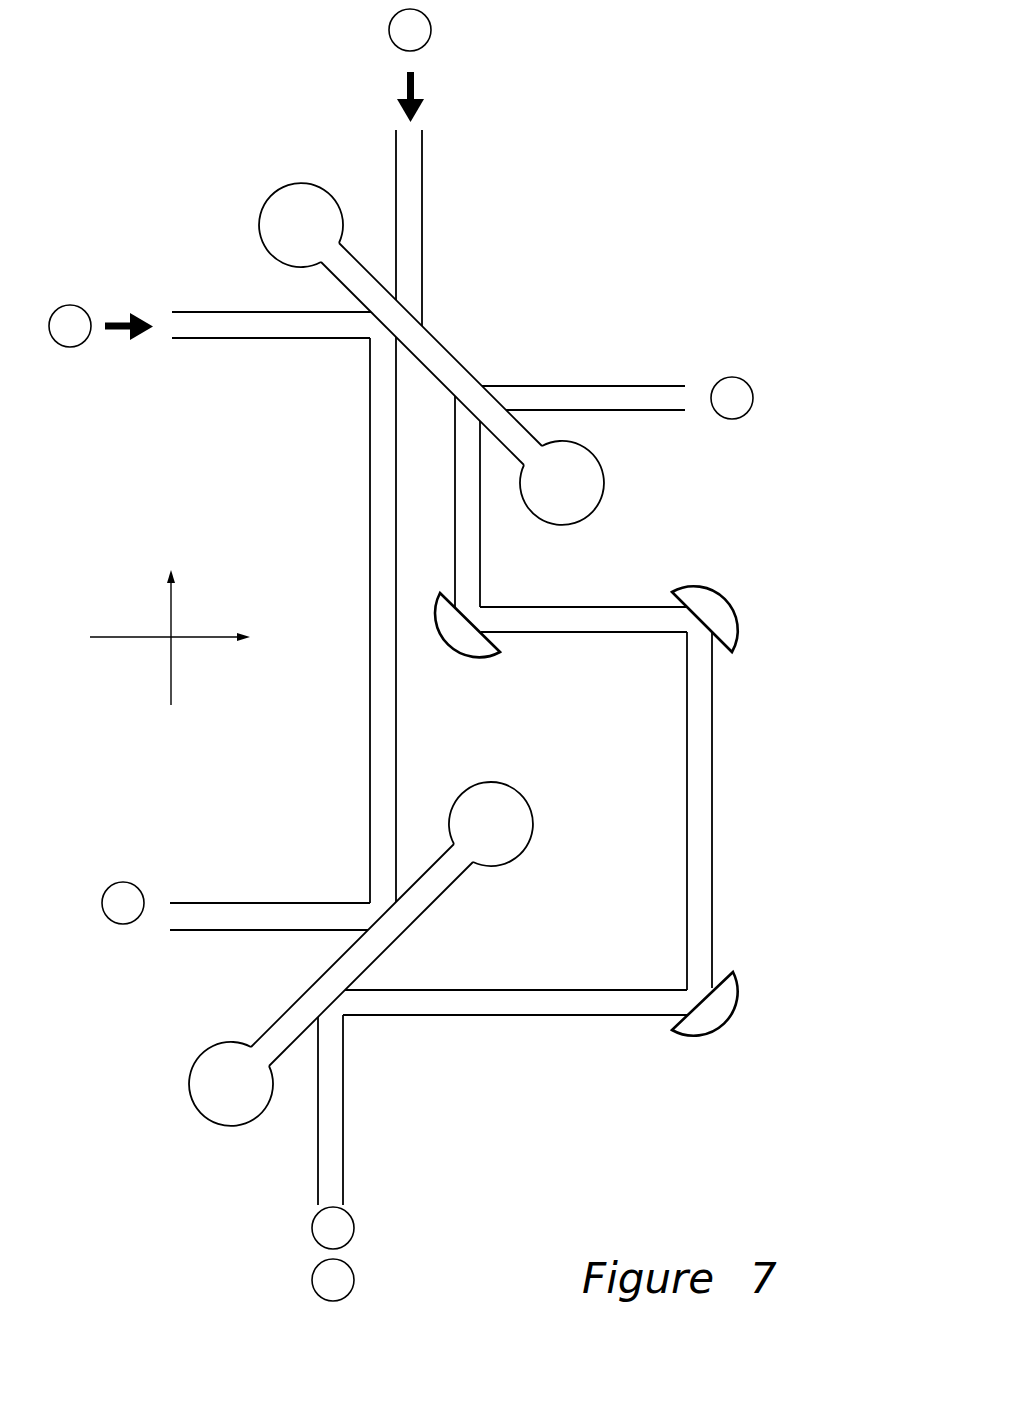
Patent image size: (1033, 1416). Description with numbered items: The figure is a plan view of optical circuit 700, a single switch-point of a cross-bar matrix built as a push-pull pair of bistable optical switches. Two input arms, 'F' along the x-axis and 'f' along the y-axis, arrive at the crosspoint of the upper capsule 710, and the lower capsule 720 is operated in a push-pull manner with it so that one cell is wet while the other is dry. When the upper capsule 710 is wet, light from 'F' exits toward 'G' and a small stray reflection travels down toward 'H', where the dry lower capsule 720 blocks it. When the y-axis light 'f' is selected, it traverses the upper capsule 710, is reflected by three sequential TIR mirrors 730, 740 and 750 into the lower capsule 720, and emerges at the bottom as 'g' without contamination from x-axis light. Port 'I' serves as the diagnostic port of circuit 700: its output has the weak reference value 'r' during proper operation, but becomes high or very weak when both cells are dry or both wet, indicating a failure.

The optical circuit 700 is at (737, 138).
The upper capsule 710 is at (562, 483).
The lower capsule 720 is at (491, 824).
The TIR mirror 730 is at (450, 648).
The TIR mirror 740 is at (730, 607).
The TIR mirror 750 is at (698, 1037).